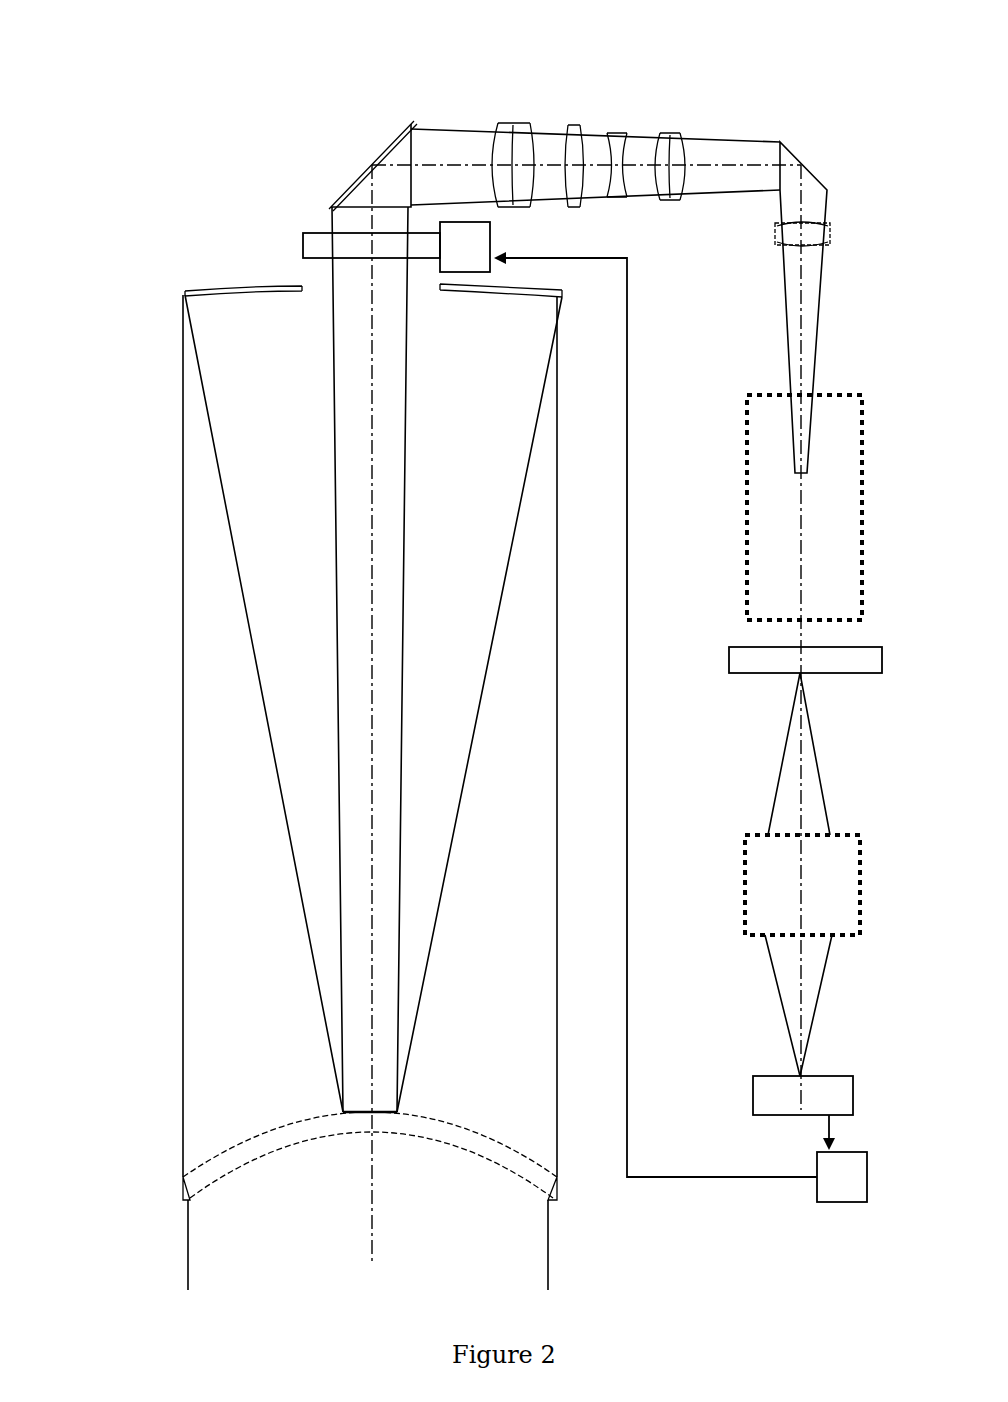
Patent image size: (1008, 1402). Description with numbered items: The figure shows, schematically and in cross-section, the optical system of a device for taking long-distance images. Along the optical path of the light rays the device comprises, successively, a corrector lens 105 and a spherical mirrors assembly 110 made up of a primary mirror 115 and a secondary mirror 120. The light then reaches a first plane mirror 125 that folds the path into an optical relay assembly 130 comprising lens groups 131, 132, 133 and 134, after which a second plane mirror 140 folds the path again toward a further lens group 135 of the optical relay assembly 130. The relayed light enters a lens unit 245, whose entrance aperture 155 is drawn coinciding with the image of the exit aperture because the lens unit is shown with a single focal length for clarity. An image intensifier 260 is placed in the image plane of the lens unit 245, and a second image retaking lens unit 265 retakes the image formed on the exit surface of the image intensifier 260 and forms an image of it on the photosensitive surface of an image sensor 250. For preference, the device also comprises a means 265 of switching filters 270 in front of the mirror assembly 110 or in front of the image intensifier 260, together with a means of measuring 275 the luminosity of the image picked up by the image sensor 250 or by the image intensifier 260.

The corrector lens 105 is at (537, 1178).
The spherical mirrors assembly 110 is at (137, 738).
The primary mirror 115 is at (185, 297).
The secondary mirror 120 is at (400, 1110).
The first plane mirror 125 is at (405, 130).
The optical relay assembly 130 is at (647, 106).
The lens group 131 is at (503, 187).
The lens group 132 is at (567, 187).
The lens group 133 is at (620, 135).
The lens group 134 is at (672, 172).
The lens group 135 is at (793, 237).
The second plane mirror 140 is at (790, 147).
The entrance aperture 155 is at (755, 507).
The lens unit 245 is at (765, 558).
The image sensor 250 is at (790, 1100).
The image intensifier 260 is at (755, 660).
The second image retaking lens unit 265 is at (765, 873).
The filters 270 is at (315, 246).
The means of measuring luminosity 275 is at (828, 1188).